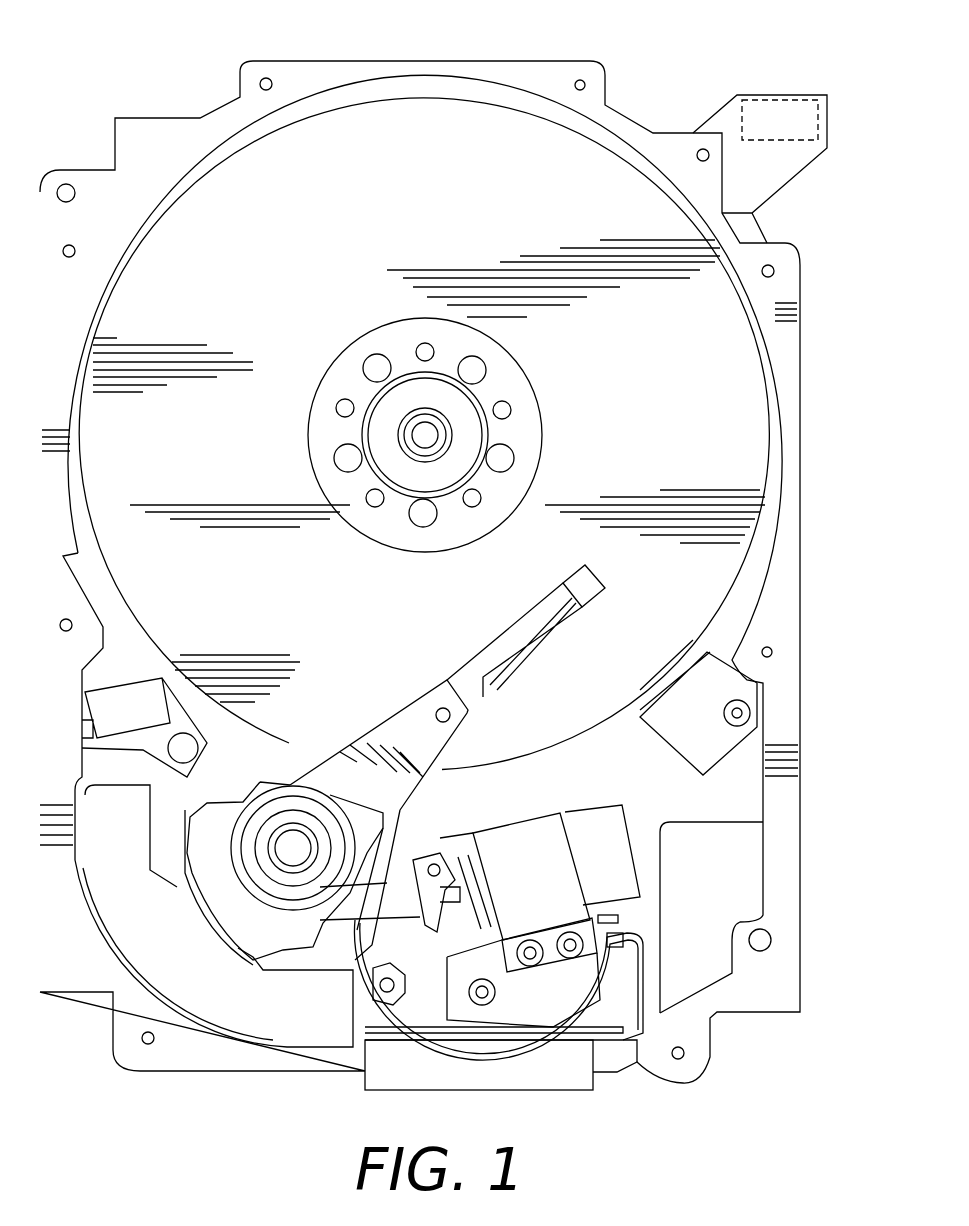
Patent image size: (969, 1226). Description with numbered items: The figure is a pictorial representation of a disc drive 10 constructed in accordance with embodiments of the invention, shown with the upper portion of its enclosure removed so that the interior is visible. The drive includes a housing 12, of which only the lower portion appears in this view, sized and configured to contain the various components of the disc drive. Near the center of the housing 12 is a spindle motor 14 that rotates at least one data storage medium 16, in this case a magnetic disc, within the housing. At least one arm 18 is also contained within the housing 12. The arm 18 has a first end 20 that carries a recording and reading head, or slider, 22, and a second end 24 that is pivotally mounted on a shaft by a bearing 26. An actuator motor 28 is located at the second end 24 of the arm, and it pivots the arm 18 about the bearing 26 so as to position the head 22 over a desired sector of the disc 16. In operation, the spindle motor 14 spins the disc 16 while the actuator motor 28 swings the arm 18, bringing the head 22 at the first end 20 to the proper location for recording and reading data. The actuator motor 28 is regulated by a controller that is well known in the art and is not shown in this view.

The disc drive 10 is at (433, 549).
The housing 12 is at (560, 72).
The spindle motor 14 is at (418, 437).
The data storage medium 16 is at (340, 233).
The arm 18 is at (407, 728).
The first end 20 is at (527, 617).
The recording and reading head 22 is at (583, 583).
The second end 24 is at (318, 785).
The bearing 26 is at (282, 830).
The actuator motor 28 is at (182, 965).